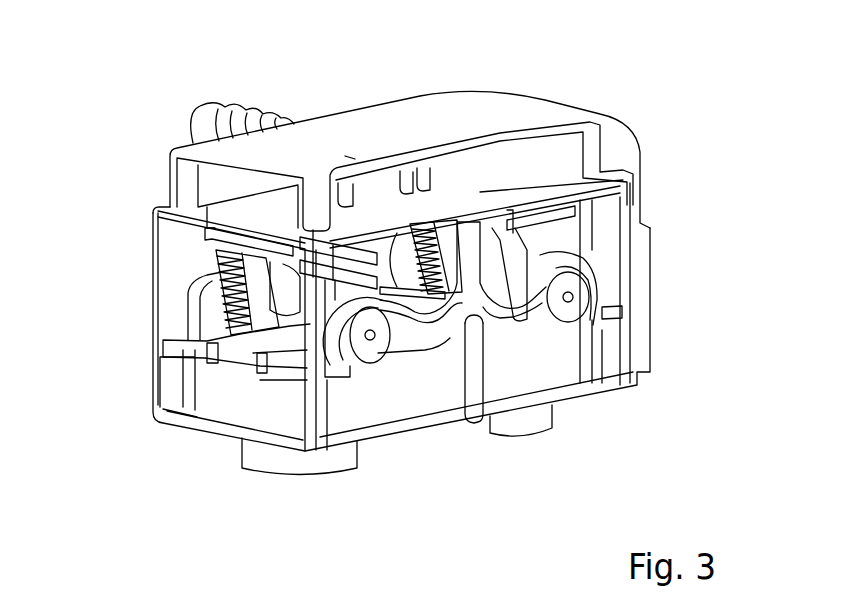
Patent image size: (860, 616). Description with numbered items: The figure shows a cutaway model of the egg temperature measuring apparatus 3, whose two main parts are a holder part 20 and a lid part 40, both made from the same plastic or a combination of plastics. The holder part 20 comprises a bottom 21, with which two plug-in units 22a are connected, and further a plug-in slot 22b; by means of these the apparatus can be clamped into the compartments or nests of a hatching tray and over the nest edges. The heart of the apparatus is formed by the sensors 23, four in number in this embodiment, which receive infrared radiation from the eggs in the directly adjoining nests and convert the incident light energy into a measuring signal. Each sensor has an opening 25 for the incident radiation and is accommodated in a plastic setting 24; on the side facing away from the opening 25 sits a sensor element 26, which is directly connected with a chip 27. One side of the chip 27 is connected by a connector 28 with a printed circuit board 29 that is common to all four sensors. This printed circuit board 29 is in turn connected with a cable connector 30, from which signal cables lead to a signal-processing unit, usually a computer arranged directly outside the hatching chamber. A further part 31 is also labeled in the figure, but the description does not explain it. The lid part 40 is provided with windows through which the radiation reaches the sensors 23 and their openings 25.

The apparatus 3 is at (641, 112).
The holder part 20 is at (642, 280).
The bottom 21 is at (153, 393).
The plug-in units 22a is at (291, 470).
The plug-in slot 22b is at (468, 392).
The sensors 23 is at (589, 301).
The setting 24 is at (583, 260).
The opening 25 is at (572, 300).
The sensor element 26 is at (523, 312).
The chip 27 is at (232, 297).
The connector 28 is at (212, 240).
The printed circuit board 29 is at (208, 215).
The cable connector 30 is at (210, 133).
The tabs 31 is at (402, 180).
The lid part 40 is at (620, 147).